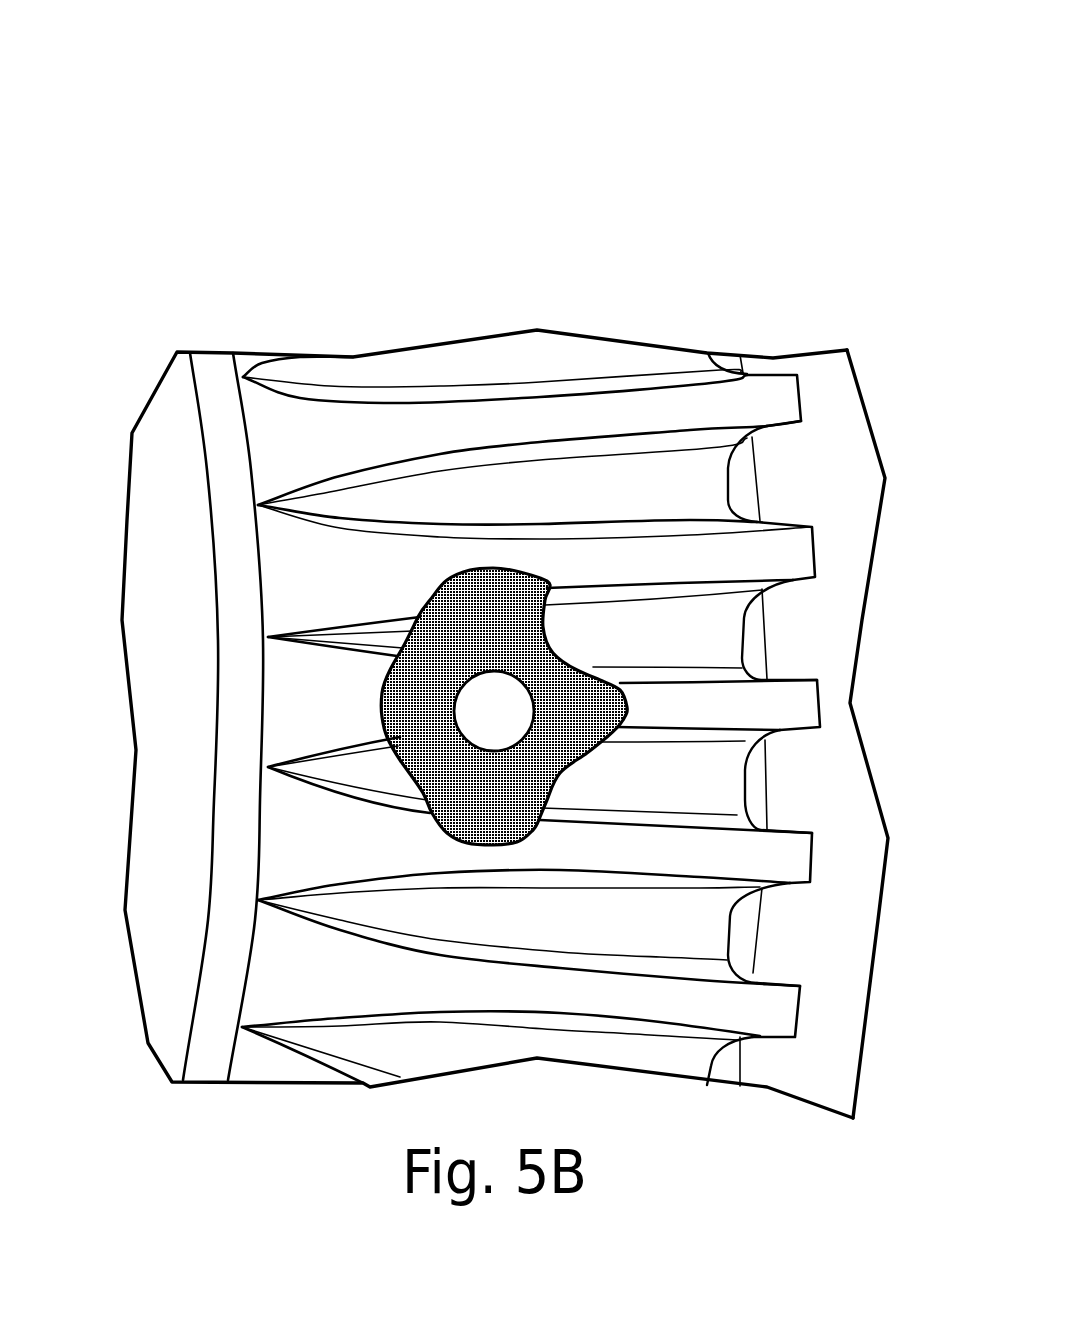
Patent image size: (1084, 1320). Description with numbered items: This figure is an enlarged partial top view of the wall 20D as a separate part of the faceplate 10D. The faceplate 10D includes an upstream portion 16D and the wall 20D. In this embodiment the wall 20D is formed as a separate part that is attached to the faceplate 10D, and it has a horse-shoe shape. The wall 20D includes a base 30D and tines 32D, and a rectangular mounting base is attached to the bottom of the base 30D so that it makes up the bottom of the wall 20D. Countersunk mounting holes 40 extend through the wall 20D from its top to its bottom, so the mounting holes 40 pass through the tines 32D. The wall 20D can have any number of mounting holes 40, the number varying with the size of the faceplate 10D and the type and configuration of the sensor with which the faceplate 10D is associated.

The faceplate 10D is at (203, 126).
The wall 20D is at (171, 268).
The upstream portion 16D is at (822, 773).
The base 30D is at (243, 876).
The tines 32D is at (740, 1003).
The countersunk mounting holes 40 is at (492, 707).